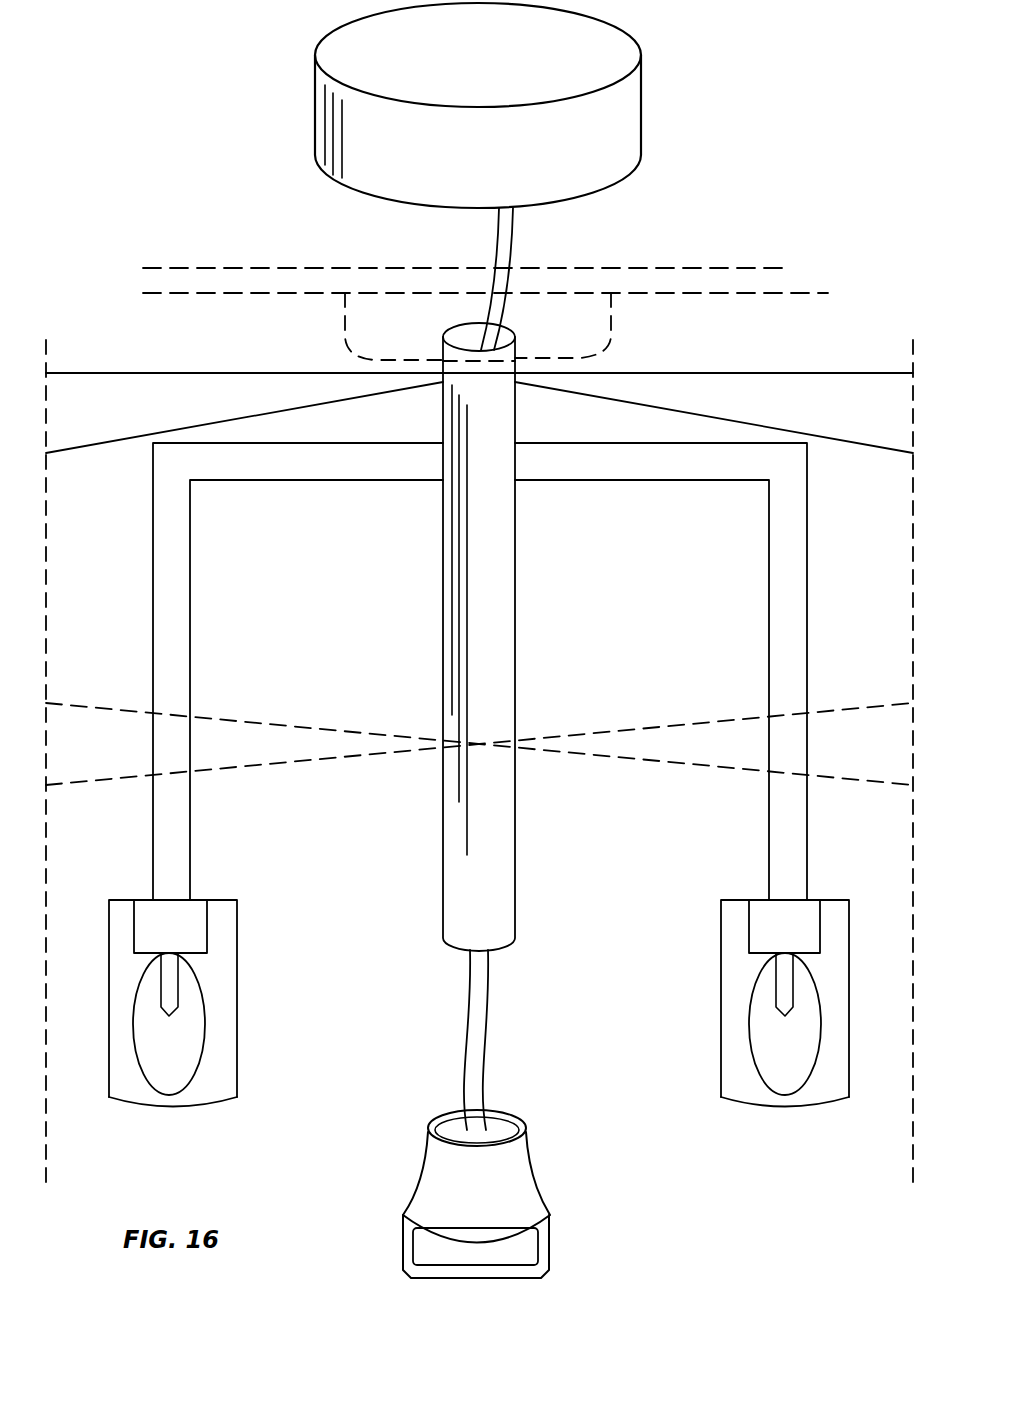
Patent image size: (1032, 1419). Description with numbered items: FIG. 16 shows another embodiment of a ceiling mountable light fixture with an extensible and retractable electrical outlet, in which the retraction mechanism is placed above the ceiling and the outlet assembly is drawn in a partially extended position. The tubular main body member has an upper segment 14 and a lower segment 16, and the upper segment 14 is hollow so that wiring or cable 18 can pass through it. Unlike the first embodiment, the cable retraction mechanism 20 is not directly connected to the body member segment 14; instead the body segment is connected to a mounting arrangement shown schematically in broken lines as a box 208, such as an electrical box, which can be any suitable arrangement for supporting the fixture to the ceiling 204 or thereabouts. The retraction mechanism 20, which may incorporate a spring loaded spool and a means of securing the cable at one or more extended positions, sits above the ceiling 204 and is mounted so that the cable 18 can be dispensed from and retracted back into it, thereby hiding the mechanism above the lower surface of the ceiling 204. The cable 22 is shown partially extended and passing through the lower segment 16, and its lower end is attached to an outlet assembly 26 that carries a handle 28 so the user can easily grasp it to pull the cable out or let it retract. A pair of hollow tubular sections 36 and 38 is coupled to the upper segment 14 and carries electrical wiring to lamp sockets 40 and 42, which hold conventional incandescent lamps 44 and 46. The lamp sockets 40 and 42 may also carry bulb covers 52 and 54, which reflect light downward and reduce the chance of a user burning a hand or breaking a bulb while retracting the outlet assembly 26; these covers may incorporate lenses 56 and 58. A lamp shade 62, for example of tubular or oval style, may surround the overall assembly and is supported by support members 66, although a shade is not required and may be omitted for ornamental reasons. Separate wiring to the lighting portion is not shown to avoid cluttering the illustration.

The upper segment 14 is at (459, 639).
The lower segment 16 is at (500, 906).
The cable 18 is at (517, 212).
The cable retraction mechanism 20 is at (607, 187).
The cable 22 is at (472, 1016).
The outlet assembly 26 is at (510, 1193).
The handle 28 is at (475, 1278).
The tubular section 36 is at (200, 460).
The tubular section 38 is at (788, 543).
The lamp socket 40 is at (187, 917).
The lamp socket 42 is at (770, 913).
The incandescent lamp 44 is at (205, 1005).
The incandescent lamp 46 is at (773, 1097).
The bulb cover 52 is at (204, 997).
The bulb cover 54 is at (748, 999).
The lens 56 is at (130, 1105).
The lens 58 is at (837, 1103).
The lamp shade 62 is at (46, 575).
The support members 66 is at (680, 372).
The ceiling 204 is at (242, 268).
The box 208 is at (345, 305).